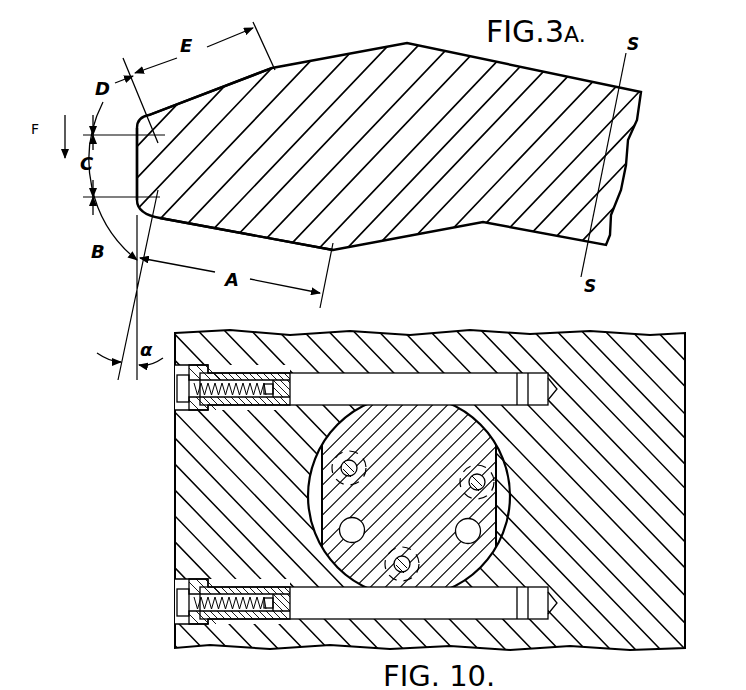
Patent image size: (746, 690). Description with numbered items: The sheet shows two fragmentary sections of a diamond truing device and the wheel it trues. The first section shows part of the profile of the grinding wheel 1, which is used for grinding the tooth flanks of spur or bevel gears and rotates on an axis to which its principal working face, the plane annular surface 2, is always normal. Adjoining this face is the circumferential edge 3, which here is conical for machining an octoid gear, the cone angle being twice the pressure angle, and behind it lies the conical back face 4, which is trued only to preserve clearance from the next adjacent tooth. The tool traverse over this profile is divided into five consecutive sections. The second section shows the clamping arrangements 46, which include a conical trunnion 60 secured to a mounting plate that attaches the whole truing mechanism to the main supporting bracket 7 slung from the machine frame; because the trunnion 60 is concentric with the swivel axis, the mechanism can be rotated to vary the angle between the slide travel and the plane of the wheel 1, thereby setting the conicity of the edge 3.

In FIG. 3A, the grinding wheel 1 is at (526, 218).
In FIG. 3A, the plane annular surface 2 is at (224, 232).
In FIG. 3A, the circumferential edge 3 is at (137, 170).
In FIG. 3A, the back face 4 is at (213, 90).
In FIG. 10, the main supporting bracket 7 is at (584, 336).
In FIG. 10, the clamping arrangements 46 is at (342, 402).
In FIG. 10, the conical trunnion 60 is at (482, 421).